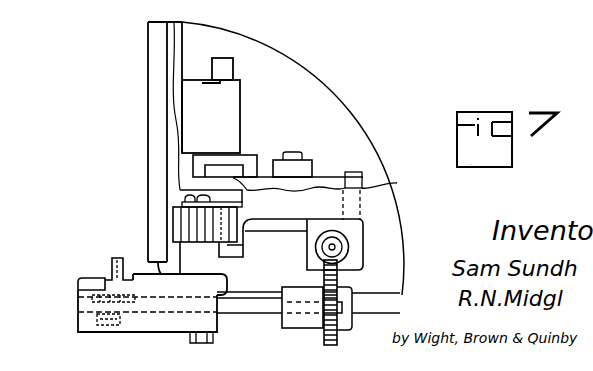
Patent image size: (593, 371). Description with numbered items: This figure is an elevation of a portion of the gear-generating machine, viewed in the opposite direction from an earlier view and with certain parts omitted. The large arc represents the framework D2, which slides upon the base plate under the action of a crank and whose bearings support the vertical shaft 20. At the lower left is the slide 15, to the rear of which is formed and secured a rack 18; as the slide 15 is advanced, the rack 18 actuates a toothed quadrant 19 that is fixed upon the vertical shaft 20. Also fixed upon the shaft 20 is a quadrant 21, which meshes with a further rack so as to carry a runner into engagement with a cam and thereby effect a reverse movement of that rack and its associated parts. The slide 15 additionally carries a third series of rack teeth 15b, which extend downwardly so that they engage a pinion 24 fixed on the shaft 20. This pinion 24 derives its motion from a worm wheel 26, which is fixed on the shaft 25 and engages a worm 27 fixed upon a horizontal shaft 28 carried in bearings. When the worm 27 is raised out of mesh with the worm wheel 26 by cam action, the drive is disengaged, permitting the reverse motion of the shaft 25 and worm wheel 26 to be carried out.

The slide 15 is at (92, 276).
The rack teeth 15b is at (110, 290).
The rack 18 is at (133, 276).
The toothed quadrant 19 is at (142, 277).
The vertical shaft 20 is at (215, 183).
The quadrant 21 is at (185, 222).
The pinion 24 is at (119, 322).
The shaft 25 is at (242, 305).
The worm wheel 26 is at (339, 338).
The worm 27 is at (341, 236).
The horizontal shaft 28 is at (343, 246).
The framework D2 is at (305, 85).